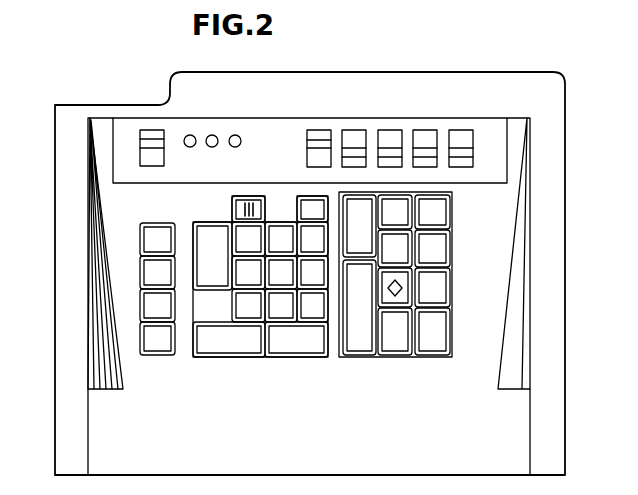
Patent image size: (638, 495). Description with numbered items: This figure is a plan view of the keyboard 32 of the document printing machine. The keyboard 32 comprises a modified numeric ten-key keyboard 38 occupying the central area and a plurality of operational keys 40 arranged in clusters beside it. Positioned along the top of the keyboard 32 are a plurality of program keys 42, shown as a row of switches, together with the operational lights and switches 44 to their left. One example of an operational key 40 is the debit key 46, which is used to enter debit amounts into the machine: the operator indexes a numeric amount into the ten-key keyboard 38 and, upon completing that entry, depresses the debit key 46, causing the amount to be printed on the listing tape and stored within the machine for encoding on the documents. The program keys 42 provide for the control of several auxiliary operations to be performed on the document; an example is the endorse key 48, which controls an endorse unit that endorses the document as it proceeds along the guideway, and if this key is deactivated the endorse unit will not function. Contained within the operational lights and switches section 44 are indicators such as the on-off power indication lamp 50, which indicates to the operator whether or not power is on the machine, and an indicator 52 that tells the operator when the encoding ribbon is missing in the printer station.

The keyboard 32 is at (427, 70).
The modified numeric 10-key keyboard 38 is at (190, 359).
The operational keys 40 is at (137, 222).
The program keys 42 is at (365, 126).
The operational lights and switches 44 is at (243, 171).
The debit key 46 is at (343, 338).
The endorse key 48 is at (294, 148).
The on-off power indication lamp 50 is at (190, 134).
The indicator 52 is at (235, 134).